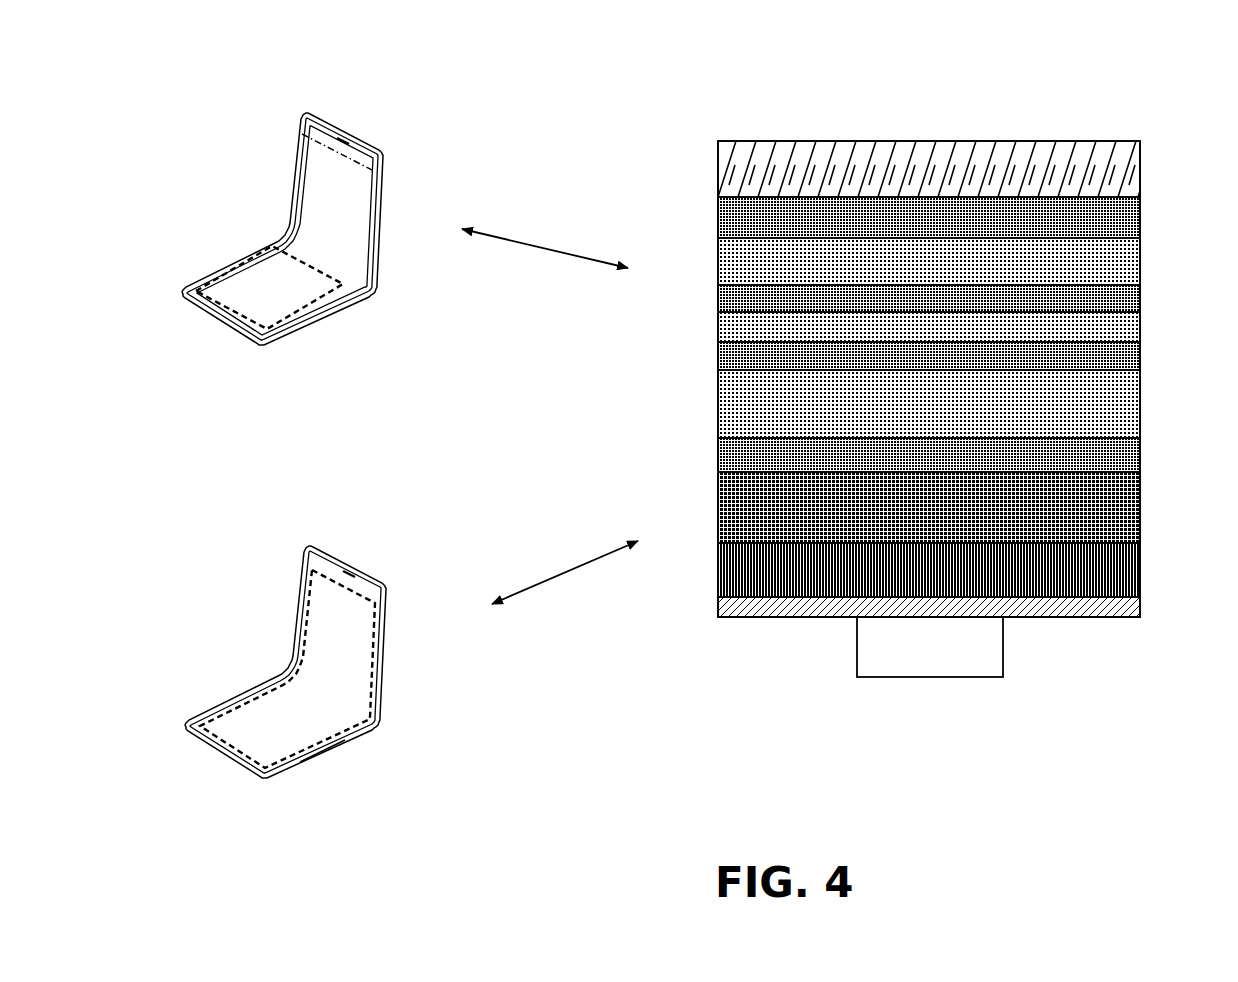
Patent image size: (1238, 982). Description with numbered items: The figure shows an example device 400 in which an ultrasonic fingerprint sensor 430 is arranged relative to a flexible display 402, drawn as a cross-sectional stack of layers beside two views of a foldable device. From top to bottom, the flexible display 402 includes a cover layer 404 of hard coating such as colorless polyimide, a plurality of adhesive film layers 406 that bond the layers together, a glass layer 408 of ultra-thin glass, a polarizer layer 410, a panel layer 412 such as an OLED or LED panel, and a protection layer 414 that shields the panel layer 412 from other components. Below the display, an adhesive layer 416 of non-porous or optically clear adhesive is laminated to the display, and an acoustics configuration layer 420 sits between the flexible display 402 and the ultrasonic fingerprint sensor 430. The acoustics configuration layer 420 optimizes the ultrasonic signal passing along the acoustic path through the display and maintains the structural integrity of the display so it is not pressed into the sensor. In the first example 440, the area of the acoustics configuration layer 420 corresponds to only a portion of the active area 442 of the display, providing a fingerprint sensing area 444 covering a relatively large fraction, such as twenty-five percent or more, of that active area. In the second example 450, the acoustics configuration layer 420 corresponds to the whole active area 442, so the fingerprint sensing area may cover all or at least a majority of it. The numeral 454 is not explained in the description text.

The example device 400 is at (300, 84).
The flexible display 402 is at (718, 141).
The cover layer 404 is at (1118, 173).
The adhesive film layers 406 is at (1118, 218).
The glass layer 408 is at (1118, 266).
The polarizer layer 410 is at (1118, 331).
The panel layer 412 is at (1118, 408).
The protection layer 414 is at (1118, 511).
The adhesive layer 416 is at (1118, 566).
The acoustics configuration layer 420 is at (1118, 611).
The ultrasonic fingerprint sensor 430 is at (949, 659).
The reference number 440 (first example) 440 is at (392, 121).
The active area 442 is at (311, 170).
The fingerprint sensing area 444 is at (340, 290).
The reference number 450 (second example) 450 is at (392, 557).
The bend region 454 is at (329, 729).